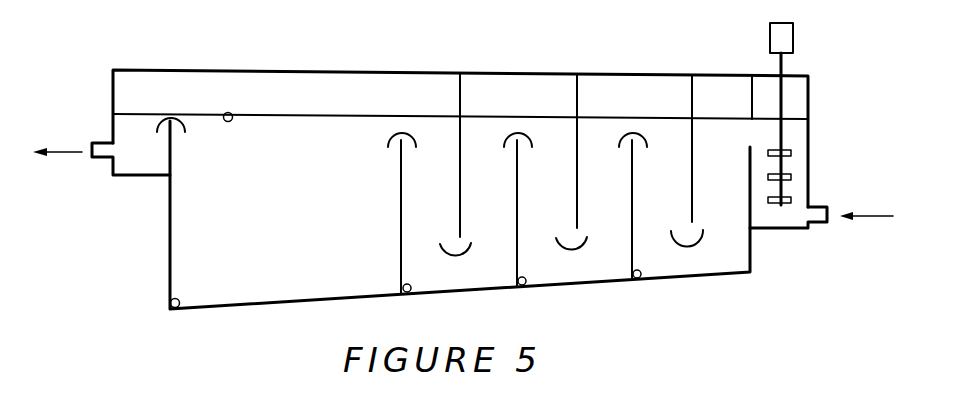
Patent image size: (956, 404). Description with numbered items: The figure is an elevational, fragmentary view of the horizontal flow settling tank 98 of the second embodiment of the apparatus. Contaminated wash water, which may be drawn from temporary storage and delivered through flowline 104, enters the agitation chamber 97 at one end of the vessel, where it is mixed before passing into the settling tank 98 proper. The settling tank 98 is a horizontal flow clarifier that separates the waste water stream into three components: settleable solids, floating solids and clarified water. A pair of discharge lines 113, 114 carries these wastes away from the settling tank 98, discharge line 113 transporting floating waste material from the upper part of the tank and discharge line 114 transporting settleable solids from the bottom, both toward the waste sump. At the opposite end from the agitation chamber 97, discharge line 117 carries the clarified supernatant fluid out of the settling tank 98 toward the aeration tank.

The settling tank 98 is at (638, 56).
The agitation chamber 97 is at (806, 76).
The flowline 104 is at (816, 207).
The discharge line 117 is at (98, 143).
The discharge line 113 is at (233, 112).
The discharge line 114 is at (172, 314).